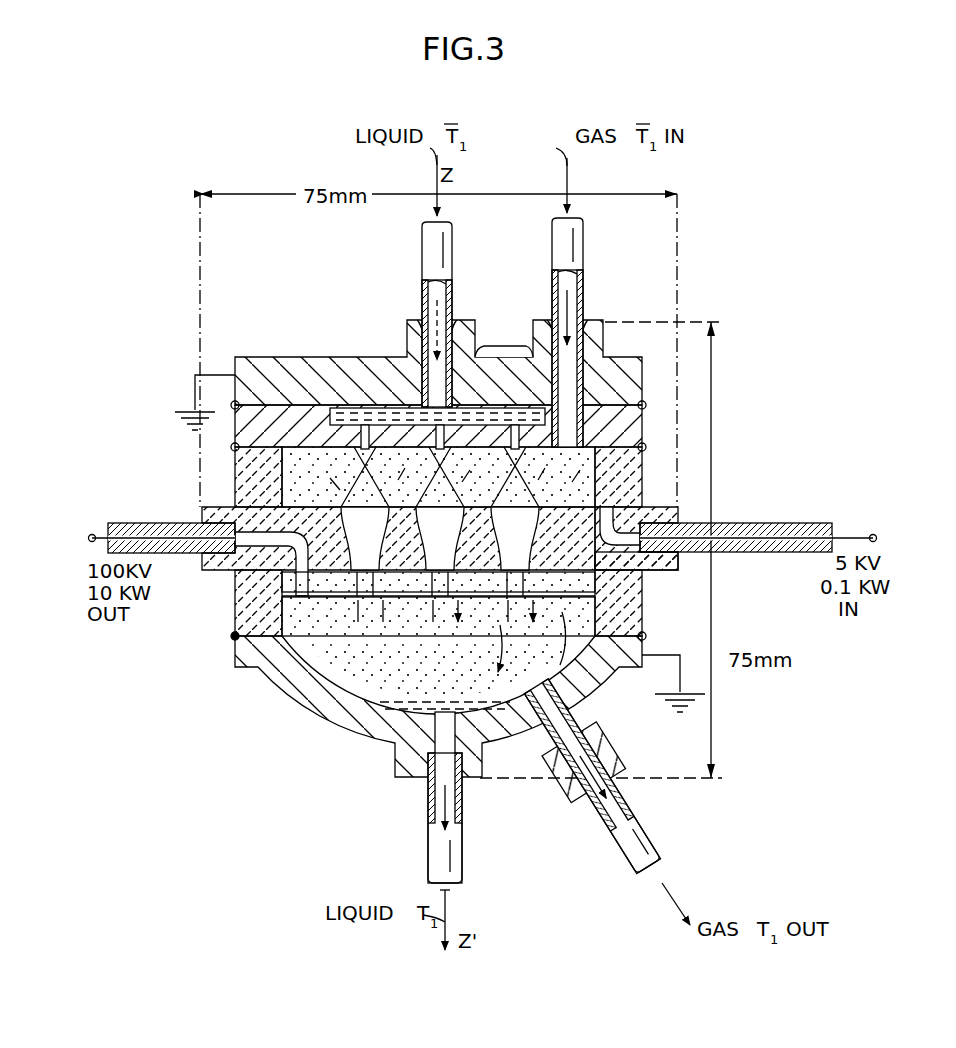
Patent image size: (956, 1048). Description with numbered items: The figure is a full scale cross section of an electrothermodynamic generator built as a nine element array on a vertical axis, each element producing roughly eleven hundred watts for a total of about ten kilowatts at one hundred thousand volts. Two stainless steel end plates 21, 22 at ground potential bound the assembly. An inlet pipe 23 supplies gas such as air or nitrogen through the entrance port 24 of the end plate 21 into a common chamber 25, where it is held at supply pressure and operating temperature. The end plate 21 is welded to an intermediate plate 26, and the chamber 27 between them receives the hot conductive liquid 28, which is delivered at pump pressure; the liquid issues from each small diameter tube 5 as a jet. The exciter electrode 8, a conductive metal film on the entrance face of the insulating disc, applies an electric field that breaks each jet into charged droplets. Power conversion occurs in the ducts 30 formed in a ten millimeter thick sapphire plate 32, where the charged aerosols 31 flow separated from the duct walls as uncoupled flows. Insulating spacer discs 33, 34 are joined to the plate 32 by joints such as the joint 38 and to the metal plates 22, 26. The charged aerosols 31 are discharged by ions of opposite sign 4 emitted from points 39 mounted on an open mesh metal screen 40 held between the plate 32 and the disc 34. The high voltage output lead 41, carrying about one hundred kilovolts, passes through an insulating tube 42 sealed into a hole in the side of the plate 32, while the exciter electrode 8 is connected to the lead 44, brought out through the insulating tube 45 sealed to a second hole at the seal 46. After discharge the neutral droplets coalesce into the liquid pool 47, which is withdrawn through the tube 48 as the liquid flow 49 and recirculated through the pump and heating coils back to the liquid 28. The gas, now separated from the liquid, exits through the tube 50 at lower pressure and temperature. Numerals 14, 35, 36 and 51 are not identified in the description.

The ions of opposite sign 4 is at (382, 577).
The small diameter tube 5 is at (363, 462).
The exciter electrode 8 is at (318, 503).
The lower chamber 14 is at (352, 585).
The end plate 21 is at (236, 355).
The end plate 22 is at (333, 724).
The inlet pipe 23 is at (583, 262).
The entrance port 24 is at (575, 373).
The common chamber 25 is at (587, 480).
The intermediate plate 26 is at (650, 425).
The chamber 27 is at (497, 410).
The conductive liquid 28 is at (352, 410).
The ducts 30 is at (350, 572).
The charged aerosols 31 is at (377, 533).
The sapphire plate 32 is at (233, 507).
The insulating spacer disc 33 is at (235, 473).
The insulating spacer disc 34 is at (235, 600).
The bolt 35 is at (643, 403).
The right lower insulator block 36 is at (645, 638).
The joint 38 is at (648, 504).
The points 39 is at (380, 612).
The open mesh metal screen 40 is at (478, 597).
The 100K lead 41 is at (97, 527).
The insulating tube 42 is at (135, 522).
The lead 44 is at (853, 532).
The insulating tube 45 is at (757, 523).
The seal 46 is at (678, 562).
The liquid pool 47 is at (473, 707).
The tube 48 is at (428, 853).
The liquid flow 49 is at (448, 892).
The tube 50 is at (636, 818).
The gas outlet flow arrow 51 is at (670, 897).